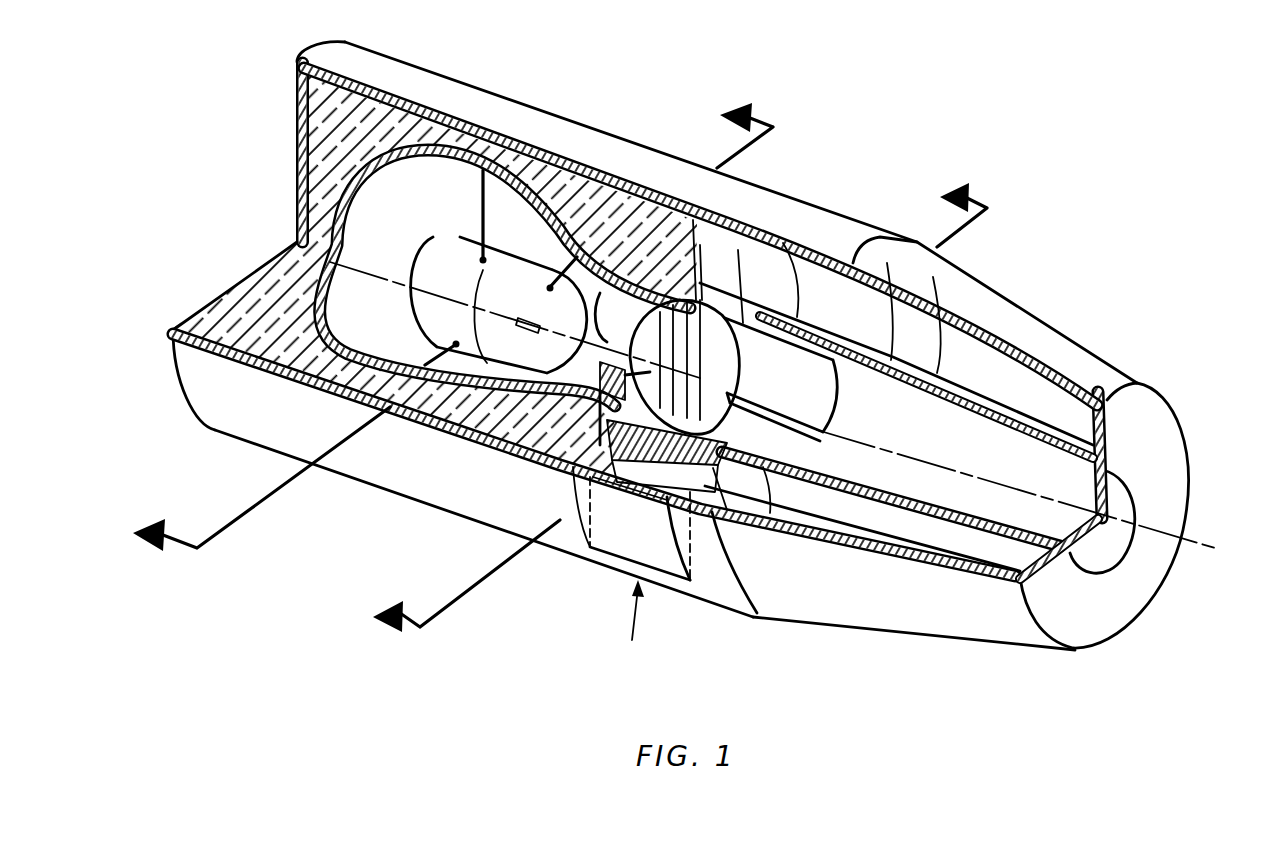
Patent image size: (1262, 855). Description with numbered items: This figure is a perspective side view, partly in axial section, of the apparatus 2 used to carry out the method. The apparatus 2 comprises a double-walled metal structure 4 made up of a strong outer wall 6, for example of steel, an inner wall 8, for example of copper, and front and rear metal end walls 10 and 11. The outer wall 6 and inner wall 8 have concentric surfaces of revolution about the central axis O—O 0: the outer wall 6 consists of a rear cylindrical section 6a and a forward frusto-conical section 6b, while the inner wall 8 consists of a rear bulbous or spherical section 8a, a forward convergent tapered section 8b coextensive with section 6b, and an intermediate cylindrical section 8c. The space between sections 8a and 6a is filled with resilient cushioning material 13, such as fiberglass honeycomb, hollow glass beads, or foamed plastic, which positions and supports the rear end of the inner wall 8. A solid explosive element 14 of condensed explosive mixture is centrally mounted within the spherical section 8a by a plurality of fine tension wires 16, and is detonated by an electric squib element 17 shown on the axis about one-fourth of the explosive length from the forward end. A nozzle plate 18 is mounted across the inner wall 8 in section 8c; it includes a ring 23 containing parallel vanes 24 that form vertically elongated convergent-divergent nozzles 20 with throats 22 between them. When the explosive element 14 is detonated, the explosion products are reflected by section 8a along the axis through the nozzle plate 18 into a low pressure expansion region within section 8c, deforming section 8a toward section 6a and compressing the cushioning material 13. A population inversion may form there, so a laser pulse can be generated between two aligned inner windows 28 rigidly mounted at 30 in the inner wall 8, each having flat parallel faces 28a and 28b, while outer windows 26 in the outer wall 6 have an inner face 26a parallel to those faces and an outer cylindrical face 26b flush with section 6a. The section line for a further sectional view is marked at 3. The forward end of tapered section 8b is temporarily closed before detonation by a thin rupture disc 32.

The central axis O—O 0 is at (297, 242).
The apparatus 2 is at (440, 374).
The section line 3- 3 is at (664, 407).
The double-walled metal structure 4 is at (420, 503).
The outer wall 6 is at (477, 523).
The rear cylindrical section 6a is at (380, 467).
The forward tapered section 6b is at (880, 613).
The inner wall 8 is at (598, 246).
The rear bulbous section 8a is at (487, 152).
The forward convergent tapered section 8b is at (1012, 410).
The intermediate cylindrical section 8c is at (783, 277).
The front end wall 10 is at (1104, 515).
The rear end wall 11 is at (296, 130).
The resilient cushioning material 13 is at (290, 258).
The solid explosive element 14 is at (450, 257).
The fine tension wires 16 is at (382, 275).
The electric squib element 17 is at (532, 318).
The nozzle plate 18 is at (710, 407).
The convergent-divergent nozzle 20 is at (697, 352).
The throat 22 is at (507, 447).
The ring 23 is at (607, 313).
The parallel vanes 24 is at (700, 283).
The outer windows 26 is at (708, 400).
The inner face 26a is at (870, 313).
The outer cylindrical face 26b is at (633, 547).
The inner windows 28 is at (722, 396).
The inner window face 28a is at (823, 393).
The inner window face 28b is at (703, 497).
The window mounting 30 is at (763, 553).
The rupture disc 32 is at (1102, 482).